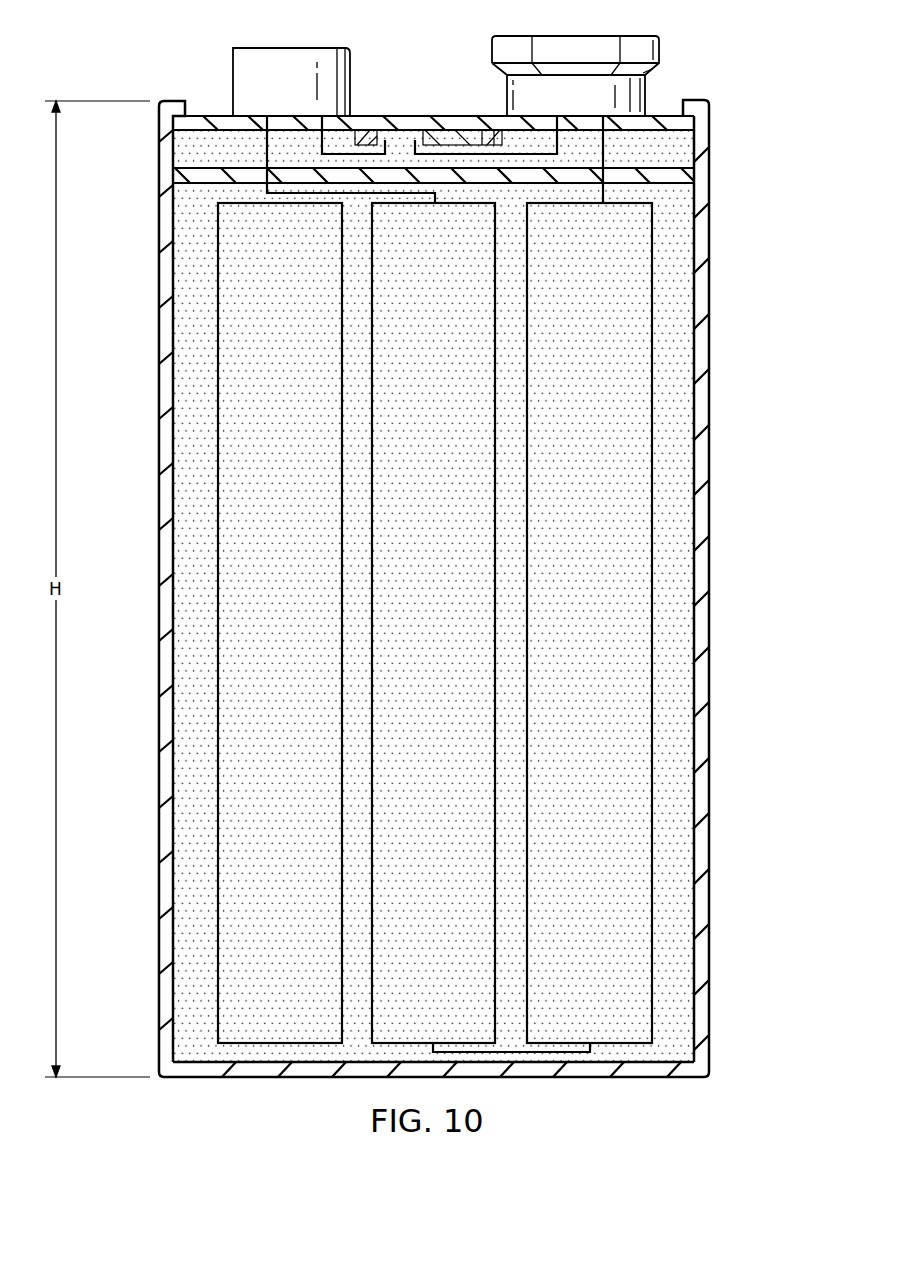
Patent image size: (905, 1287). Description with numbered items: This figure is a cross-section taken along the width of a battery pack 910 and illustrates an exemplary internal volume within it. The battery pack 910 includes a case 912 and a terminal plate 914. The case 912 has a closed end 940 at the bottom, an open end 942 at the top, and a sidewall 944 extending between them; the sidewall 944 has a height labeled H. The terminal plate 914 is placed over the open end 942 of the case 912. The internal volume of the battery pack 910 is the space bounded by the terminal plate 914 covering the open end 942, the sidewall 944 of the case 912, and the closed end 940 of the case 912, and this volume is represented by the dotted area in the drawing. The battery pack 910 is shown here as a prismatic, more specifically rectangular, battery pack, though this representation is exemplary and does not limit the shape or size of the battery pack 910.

The battery pack 910 is at (457, 588).
The case 912 is at (710, 620).
The terminal plate 914 is at (220, 113).
The closed end 940 is at (236, 1087).
The open end 942 is at (162, 88).
The sidewall 944 is at (148, 630).